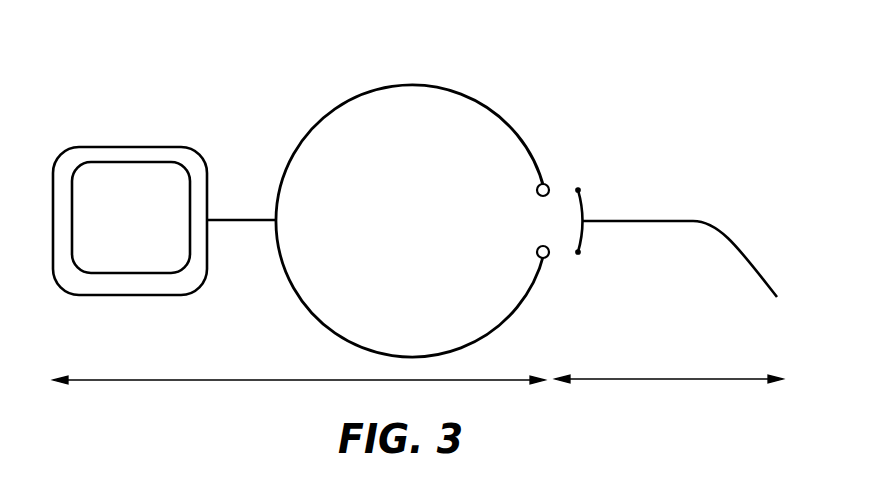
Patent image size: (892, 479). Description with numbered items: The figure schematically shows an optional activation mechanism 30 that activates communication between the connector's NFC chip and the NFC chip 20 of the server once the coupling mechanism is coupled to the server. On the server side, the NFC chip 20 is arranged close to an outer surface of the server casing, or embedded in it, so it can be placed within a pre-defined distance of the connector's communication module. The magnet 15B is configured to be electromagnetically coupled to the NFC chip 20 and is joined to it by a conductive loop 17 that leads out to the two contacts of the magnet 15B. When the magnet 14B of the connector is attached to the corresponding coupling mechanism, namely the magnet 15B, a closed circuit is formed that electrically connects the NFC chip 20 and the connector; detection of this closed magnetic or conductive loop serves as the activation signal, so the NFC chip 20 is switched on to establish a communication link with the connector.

The activation mechanism 30 is at (649, 83).
The NFC chip 20 is at (117, 162).
The loop cable 17 is at (342, 102).
The magnet 15B is at (545, 184).
The magnet 14B is at (580, 189).